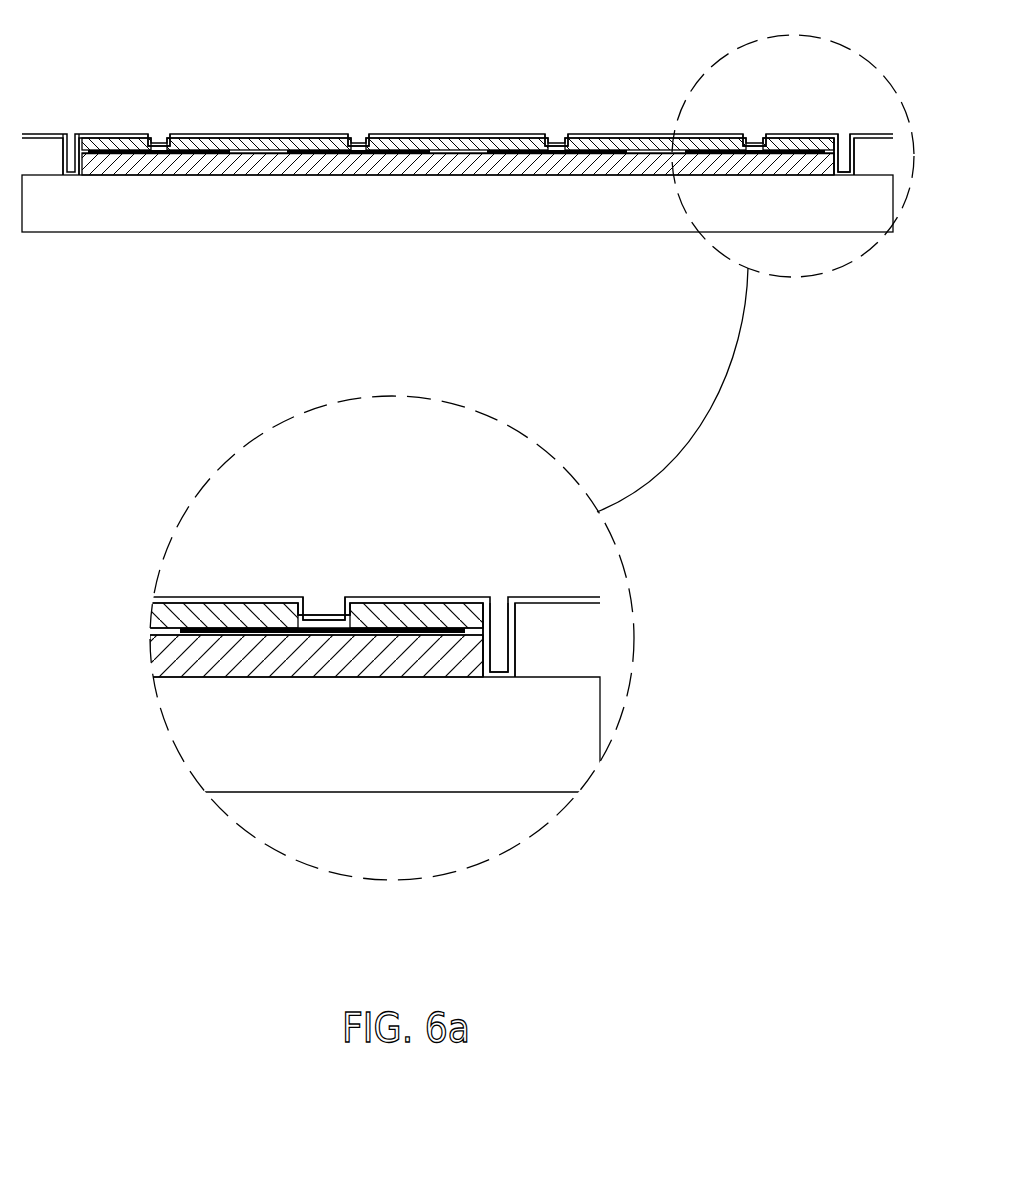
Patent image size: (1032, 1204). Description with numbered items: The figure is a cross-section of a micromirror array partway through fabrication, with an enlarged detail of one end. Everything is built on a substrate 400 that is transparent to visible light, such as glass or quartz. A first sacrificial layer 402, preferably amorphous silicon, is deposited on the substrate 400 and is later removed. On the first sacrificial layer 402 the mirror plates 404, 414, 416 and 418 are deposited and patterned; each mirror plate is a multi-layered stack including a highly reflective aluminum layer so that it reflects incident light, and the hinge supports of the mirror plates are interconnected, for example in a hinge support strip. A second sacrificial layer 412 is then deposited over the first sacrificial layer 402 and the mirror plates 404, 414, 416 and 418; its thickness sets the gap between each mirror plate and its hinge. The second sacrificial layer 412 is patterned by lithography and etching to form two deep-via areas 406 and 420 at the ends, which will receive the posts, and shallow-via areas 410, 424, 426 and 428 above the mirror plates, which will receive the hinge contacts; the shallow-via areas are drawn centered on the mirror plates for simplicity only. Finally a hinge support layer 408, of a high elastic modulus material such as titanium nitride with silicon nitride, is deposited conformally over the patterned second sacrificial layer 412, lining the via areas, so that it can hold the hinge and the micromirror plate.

The substrate 400 is at (288, 234).
The first sacrificial layer 402 is at (190, 678).
The mirror plate 404 is at (367, 633).
The deep-via area 406 is at (498, 603).
The hinge support layer 408 is at (417, 598).
The shallow-via area 410 is at (320, 597).
The second sacrificial layer 412 is at (183, 615).
The mirror plate 414 is at (500, 147).
The mirror plate 416 is at (310, 147).
The mirror plate 418 is at (107, 147).
The deep-via area 420 is at (72, 134).
The shallow-via area 424 is at (557, 140).
The shallow-via area 426 is at (360, 138).
The shallow-via area 428 is at (160, 134).